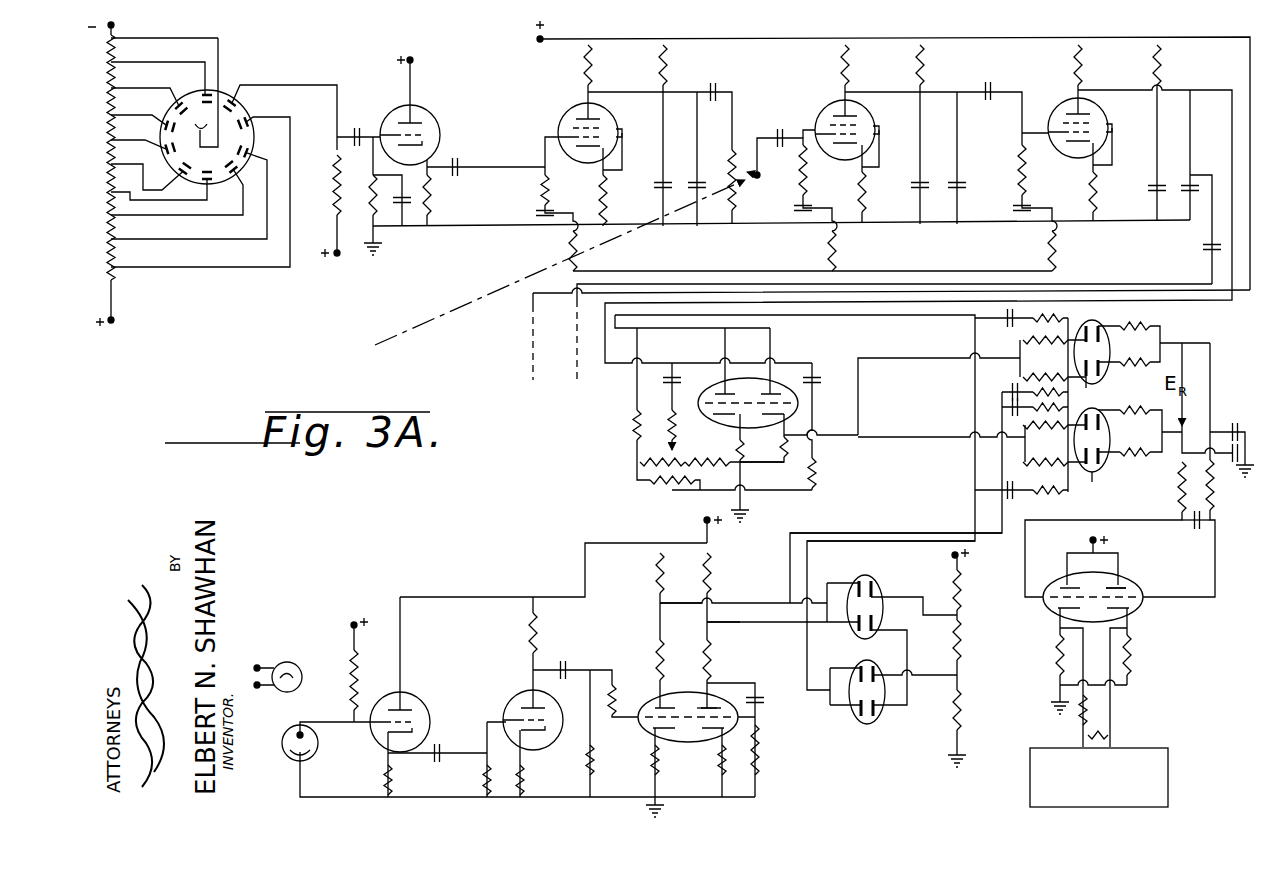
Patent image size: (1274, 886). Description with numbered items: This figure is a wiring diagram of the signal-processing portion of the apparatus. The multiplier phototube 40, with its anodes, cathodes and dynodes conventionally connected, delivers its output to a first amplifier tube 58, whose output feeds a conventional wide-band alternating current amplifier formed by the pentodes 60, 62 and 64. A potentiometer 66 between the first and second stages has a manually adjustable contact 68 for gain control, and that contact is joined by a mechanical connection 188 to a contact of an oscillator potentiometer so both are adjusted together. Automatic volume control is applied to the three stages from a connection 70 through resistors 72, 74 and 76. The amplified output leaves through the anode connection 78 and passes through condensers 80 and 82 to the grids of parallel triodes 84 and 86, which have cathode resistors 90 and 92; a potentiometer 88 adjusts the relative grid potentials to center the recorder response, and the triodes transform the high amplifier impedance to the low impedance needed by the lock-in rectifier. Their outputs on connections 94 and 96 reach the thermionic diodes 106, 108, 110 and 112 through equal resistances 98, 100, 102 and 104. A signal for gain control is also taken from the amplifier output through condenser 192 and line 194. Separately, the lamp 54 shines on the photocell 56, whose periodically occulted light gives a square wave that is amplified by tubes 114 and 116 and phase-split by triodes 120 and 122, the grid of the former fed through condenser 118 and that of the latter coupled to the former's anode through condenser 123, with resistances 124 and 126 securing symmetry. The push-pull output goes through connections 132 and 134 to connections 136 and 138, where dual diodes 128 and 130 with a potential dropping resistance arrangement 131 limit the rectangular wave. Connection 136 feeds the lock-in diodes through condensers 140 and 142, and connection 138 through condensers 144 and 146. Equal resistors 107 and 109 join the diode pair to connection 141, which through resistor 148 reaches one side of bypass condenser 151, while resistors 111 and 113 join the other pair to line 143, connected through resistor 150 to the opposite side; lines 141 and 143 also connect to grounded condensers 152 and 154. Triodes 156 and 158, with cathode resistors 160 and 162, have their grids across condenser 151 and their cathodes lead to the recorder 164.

The multiplier phototube 40 is at (230, 80).
The lamp 54 is at (292, 662).
The photocell 56 is at (290, 763).
The first amplifier tube 58 is at (437, 118).
The pentode 60 is at (605, 88).
The pentode 62 is at (830, 96).
The pentode 64 is at (1062, 98).
The potentiometer 66 is at (738, 140).
The manually adjustable contact 68 is at (758, 180).
The connection 70 is at (577, 310).
The resistor 72 is at (580, 260).
The resistor 74 is at (838, 256).
The resistor 76 is at (1060, 252).
The anode connection 78 is at (1170, 88).
The condenser 80 is at (649, 412).
The condenser 82 is at (817, 381).
The triode 84 is at (713, 392).
The triode 86 is at (785, 377).
The potentiometer 88 is at (685, 458).
The cathode resistor 90 is at (745, 451).
The cathode resistor 92 is at (798, 426).
The connection 94 is at (848, 433).
The connection 96 is at (905, 441).
The resistance 98 is at (1045, 351).
The resistance 100 is at (1055, 363).
The resistance 102 is at (1045, 436).
The resistance 104 is at (1056, 449).
The diode 106 is at (1093, 325).
The resistor 107 is at (1152, 326).
The diode 108 is at (1092, 378).
The resistor 109 is at (1141, 349).
The diode 110 is at (1100, 410).
The resistor 111 is at (1143, 423).
The diode 112 is at (1097, 472).
The resistor 113 is at (1146, 464).
The tube 114 is at (418, 694).
The tube 116 is at (506, 700).
The condenser 118 is at (570, 662).
The triode 120 is at (662, 698).
The triode 122 is at (735, 696).
The condenser 123 is at (760, 701).
The resistance 124 is at (762, 745).
The resistance 126 is at (586, 760).
The dual diode 128 is at (881, 590).
The dual diode 130 is at (872, 726).
The potential dropping resistance arrangement 131 is at (961, 606).
The connection 132 is at (730, 603).
The connection 134 is at (745, 622).
The connection 136 is at (858, 533).
The connection 138 is at (866, 545).
The condenser 140 is at (983, 320).
The connection 141 is at (1212, 398).
The condenser 142 is at (1027, 494).
The line 143 is at (1202, 439).
The condenser 144 is at (1024, 382).
The condenser 146 is at (1021, 413).
The resistor 148 is at (1218, 490).
The resistor 150 is at (1180, 500).
The bypass condenser 151 is at (1192, 524).
The condenser 152 is at (1254, 423).
The condenser 154 is at (1254, 451).
The triode 156 is at (1139, 583).
The triode 158 is at (1053, 583).
The cathode resistor 160 is at (1140, 660).
The cathode resistor 162 is at (1048, 660).
The recorder 164 is at (1158, 748).
The mechanical connection 188 is at (487, 296).
The condenser 192 is at (1210, 255).
The line 194 is at (528, 312).